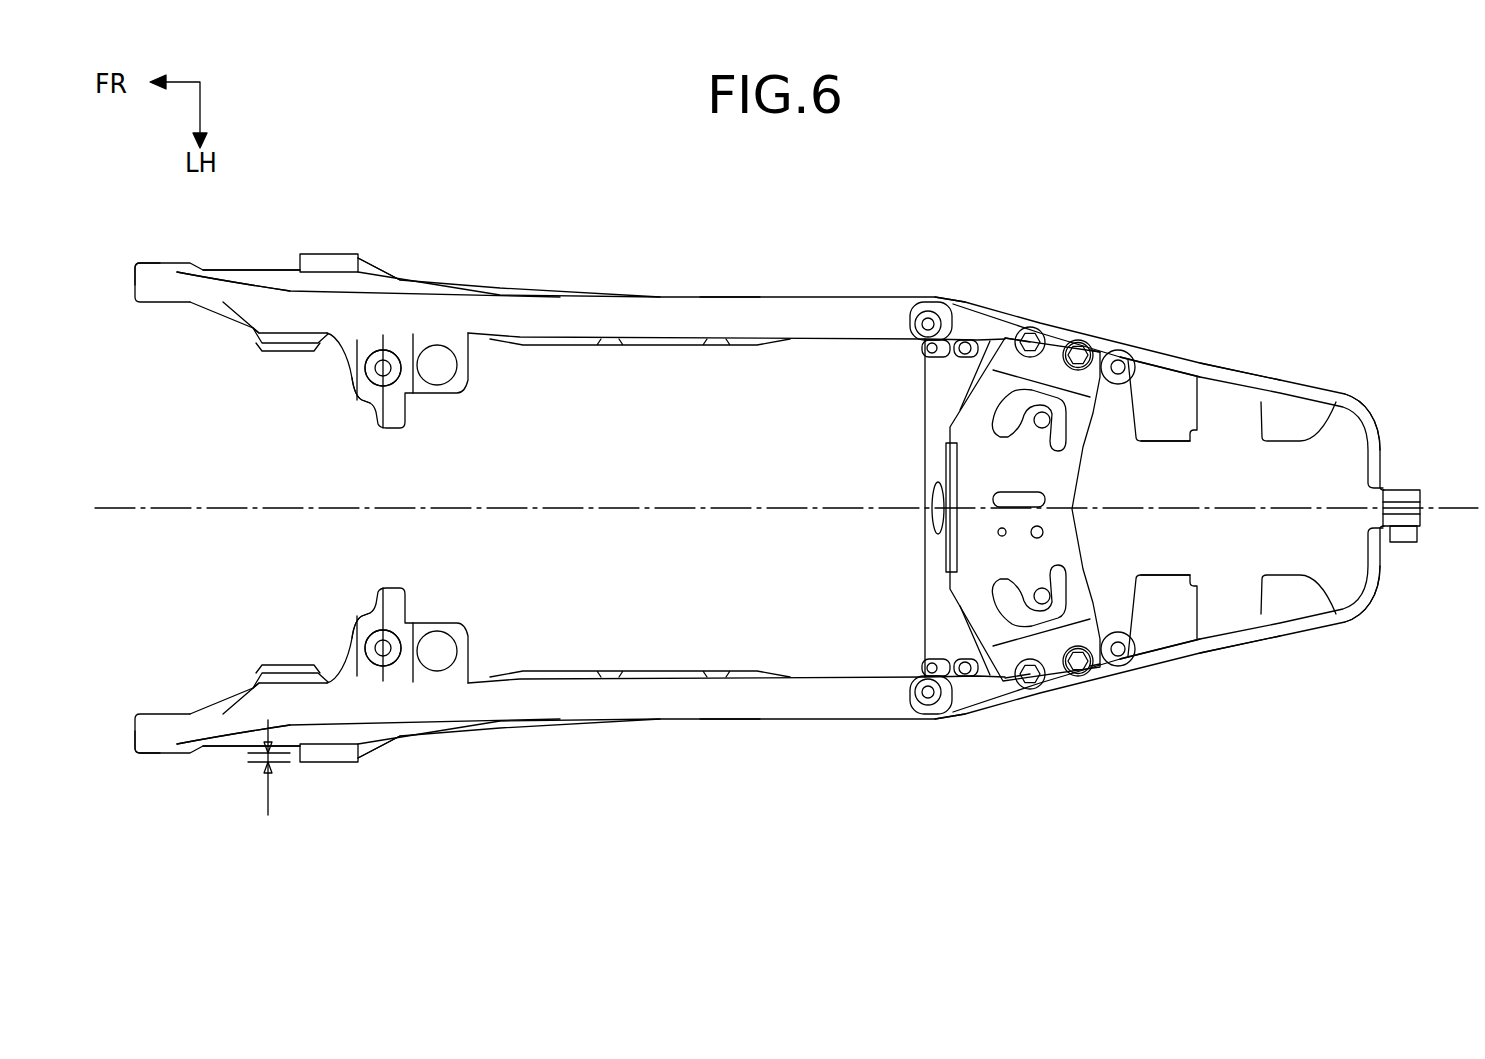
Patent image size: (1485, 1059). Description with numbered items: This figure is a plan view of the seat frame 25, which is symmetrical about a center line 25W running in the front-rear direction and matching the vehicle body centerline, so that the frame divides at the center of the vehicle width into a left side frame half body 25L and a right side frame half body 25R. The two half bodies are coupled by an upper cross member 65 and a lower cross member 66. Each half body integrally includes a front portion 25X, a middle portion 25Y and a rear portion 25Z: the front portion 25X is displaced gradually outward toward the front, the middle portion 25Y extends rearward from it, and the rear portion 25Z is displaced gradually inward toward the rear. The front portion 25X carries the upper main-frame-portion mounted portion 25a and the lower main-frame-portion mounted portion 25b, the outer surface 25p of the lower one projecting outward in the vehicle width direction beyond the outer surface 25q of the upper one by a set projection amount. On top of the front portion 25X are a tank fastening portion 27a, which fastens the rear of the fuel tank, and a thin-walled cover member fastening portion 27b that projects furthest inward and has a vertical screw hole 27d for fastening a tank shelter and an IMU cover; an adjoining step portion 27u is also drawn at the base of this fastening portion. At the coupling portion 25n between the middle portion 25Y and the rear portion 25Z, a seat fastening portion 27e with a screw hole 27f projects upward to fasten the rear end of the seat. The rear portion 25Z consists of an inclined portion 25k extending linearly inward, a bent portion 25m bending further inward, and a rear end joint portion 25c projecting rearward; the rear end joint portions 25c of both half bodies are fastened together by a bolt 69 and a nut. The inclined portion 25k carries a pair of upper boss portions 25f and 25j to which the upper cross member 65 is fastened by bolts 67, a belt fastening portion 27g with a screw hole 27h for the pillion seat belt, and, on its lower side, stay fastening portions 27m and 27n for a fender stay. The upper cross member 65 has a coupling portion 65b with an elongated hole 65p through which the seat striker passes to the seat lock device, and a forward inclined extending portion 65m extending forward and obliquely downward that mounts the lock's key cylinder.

The seat frame 25 is at (427, 158).
The upper main-frame-portion mounted portion 25a is at (158, 258).
The outer surface 25q is at (177, 262).
The front portion 25X is at (268, 265).
The lower main-frame-portion mounted portion 25b is at (328, 250).
The outer surface 25p is at (348, 252).
The right side frame half body 25R is at (657, 293).
The left side frame half body 25L is at (656, 724).
The middle portion 25Y is at (733, 318).
The center line 25W is at (143, 495).
The coupling portion 25n is at (940, 296).
The upper boss portion 25f is at (1006, 337).
The upper boss portion 25j is at (1096, 340).
The inclined portion 25k is at (1178, 365).
The rear portion 25Z is at (1230, 364).
The bent portion 25m is at (1373, 440).
The rear end joint portion 25c is at (1405, 487).
The bolt 69 is at (1404, 545).
The tank fastening portion 27a is at (250, 336).
The cover member fastening portion 27b is at (340, 381).
The bracket step portion 27u is at (353, 400).
The screw hole 27d is at (382, 372).
The seat fastening portion 27e is at (927, 316).
The screw hole 27f is at (938, 416).
The belt fastening portion 27g is at (1122, 350).
The screw hole 27h is at (1150, 398).
The stay fastening portion 27m is at (1190, 412).
The stay fastening portion 27n is at (1315, 421).
The upper cross member 65 is at (948, 426).
The elongated hole 65p is at (1045, 412).
The coupling portion 65b is at (1045, 605).
The forward inclined extending portion 65m is at (940, 563).
The lower cross member 66 is at (921, 612).
The bolt 67 is at (1030, 328).